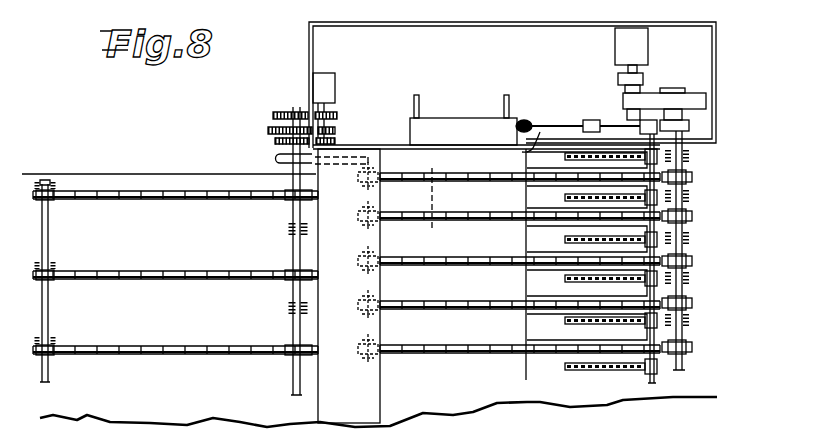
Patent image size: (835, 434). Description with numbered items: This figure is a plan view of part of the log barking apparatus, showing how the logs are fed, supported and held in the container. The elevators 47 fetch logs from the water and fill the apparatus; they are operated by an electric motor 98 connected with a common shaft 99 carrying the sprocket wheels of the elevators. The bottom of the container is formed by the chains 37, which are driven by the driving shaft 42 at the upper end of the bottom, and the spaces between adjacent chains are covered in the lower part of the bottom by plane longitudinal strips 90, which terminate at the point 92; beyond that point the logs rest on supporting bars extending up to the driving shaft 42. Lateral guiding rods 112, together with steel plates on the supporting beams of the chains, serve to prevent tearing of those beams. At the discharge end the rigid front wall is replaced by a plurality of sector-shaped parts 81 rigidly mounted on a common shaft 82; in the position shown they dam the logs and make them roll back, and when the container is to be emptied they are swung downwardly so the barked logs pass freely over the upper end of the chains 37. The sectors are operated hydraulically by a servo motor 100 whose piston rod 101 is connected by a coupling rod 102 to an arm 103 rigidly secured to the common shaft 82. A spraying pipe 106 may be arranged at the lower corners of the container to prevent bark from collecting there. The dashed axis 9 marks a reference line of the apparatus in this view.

The dashed axis line 9 is at (424, 200).
The chains 37 is at (476, 259).
The driving shaft 42 is at (681, 165).
The elevators 47 is at (188, 270).
The sector-shaped parts 81 is at (565, 240).
The common shaft 82 is at (657, 133).
The longitudinal strips 90 is at (466, 152).
The termination point of strips 92 is at (541, 132).
The electric motor 98 is at (327, 87).
The common shaft 99 is at (331, 128).
The servo motor 100 is at (440, 120).
The piston rod 101 is at (521, 119).
The coupling rod 102 is at (571, 123).
The arm 103 is at (605, 121).
The spraying pipe 106 is at (277, 157).
The lateral guiding rods 112 is at (597, 177).